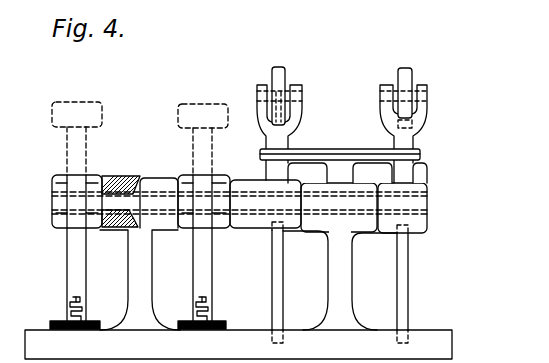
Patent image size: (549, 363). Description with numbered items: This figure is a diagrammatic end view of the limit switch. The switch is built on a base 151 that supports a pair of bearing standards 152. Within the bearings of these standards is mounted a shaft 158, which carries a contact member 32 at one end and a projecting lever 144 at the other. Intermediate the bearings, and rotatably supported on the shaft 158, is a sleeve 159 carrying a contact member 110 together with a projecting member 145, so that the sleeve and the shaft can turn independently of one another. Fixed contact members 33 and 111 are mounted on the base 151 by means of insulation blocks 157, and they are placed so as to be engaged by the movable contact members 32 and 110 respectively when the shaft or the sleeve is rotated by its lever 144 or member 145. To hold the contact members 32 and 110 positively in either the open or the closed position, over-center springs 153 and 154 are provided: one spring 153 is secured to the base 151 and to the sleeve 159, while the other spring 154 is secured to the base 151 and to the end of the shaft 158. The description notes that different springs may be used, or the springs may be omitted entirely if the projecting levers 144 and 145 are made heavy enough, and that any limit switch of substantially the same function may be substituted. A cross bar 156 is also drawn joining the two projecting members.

The contact member 32 is at (81, 101).
The contact member 33 is at (67, 252).
The contact member 110 is at (198, 104).
The contact member 111 is at (209, 280).
The projecting lever 144 is at (422, 88).
The projecting member 145 is at (300, 85).
The base 151 is at (443, 343).
The bearing standards 152 is at (132, 177).
The over-center spring 153 is at (283, 268).
The over-center spring 154 is at (408, 292).
The connecting bar 156 is at (345, 138).
The insulation blocks 157 is at (84, 321).
The shaft 158 is at (425, 212).
The sleeve 159 is at (235, 178).